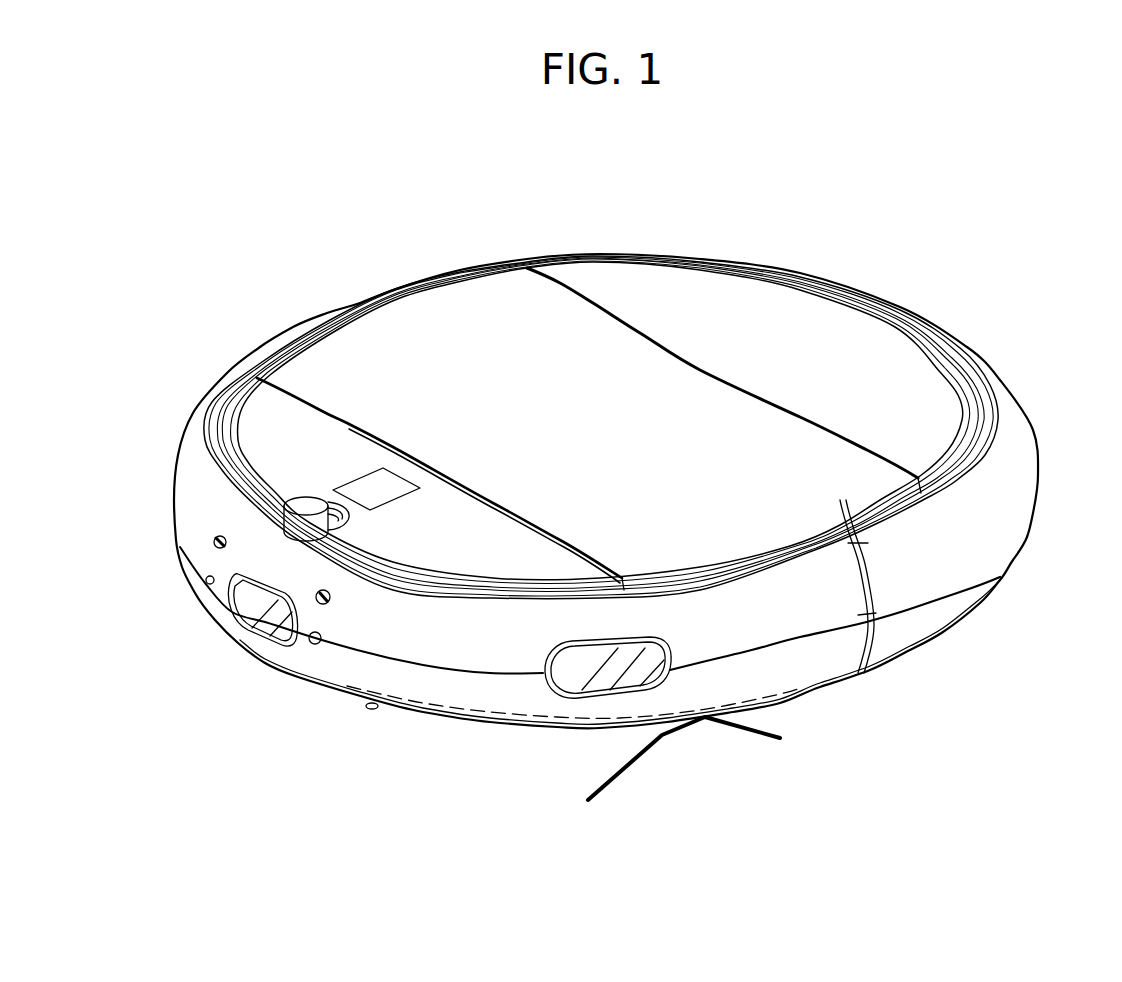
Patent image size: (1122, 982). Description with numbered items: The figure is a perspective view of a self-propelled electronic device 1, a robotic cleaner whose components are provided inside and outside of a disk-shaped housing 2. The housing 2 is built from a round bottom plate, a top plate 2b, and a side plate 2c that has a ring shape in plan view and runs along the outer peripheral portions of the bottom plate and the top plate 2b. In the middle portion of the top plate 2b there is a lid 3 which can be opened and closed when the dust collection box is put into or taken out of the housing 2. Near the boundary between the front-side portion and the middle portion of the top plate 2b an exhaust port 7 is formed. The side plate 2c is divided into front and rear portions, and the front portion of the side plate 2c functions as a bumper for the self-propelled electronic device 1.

The self-propelled electronic device 1 is at (987, 224).
The housing 2 is at (997, 515).
The top plate 2b is at (692, 282).
The side plate 2c is at (947, 567).
The lid 3 is at (702, 392).
The exhaust port 7 is at (378, 425).